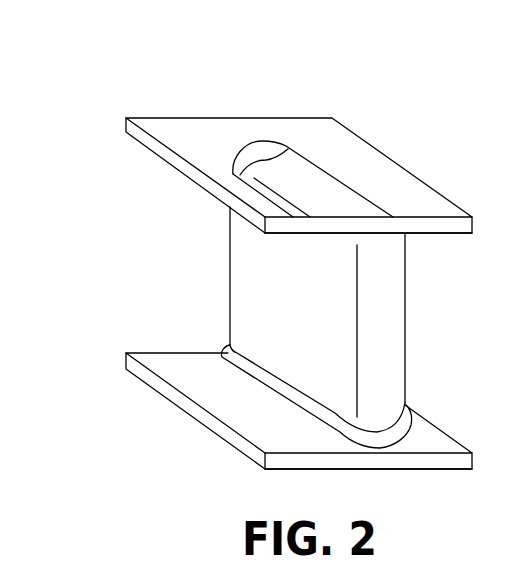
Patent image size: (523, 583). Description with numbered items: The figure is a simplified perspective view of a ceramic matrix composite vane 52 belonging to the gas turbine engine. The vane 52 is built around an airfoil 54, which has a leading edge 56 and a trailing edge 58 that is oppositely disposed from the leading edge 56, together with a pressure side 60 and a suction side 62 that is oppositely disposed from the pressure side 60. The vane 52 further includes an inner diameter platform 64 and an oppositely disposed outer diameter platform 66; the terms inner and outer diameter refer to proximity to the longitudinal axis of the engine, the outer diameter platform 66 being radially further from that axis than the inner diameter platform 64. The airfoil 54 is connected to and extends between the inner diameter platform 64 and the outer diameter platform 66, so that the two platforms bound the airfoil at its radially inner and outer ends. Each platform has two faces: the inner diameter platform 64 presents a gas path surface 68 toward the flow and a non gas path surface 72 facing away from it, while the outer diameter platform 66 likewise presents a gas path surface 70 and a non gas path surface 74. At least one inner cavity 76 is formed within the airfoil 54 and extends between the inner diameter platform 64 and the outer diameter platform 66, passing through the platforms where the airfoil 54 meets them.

The vane 52 is at (84, 109).
The airfoil 54 is at (291, 327).
The leading edge 56 is at (382, 398).
The trailing edge 58 is at (228, 210).
The pressure side 60 is at (248, 292).
The suction side 62 is at (405, 268).
The inner diameter platform 64 is at (179, 410).
The outer diameter platform 66 is at (398, 180).
The gas path surface 68 is at (160, 362).
The gas path surface 70 is at (430, 235).
The non gas path surface 72 is at (400, 470).
The non gas path surface 74 is at (308, 125).
The inner cavity 76 is at (273, 190).